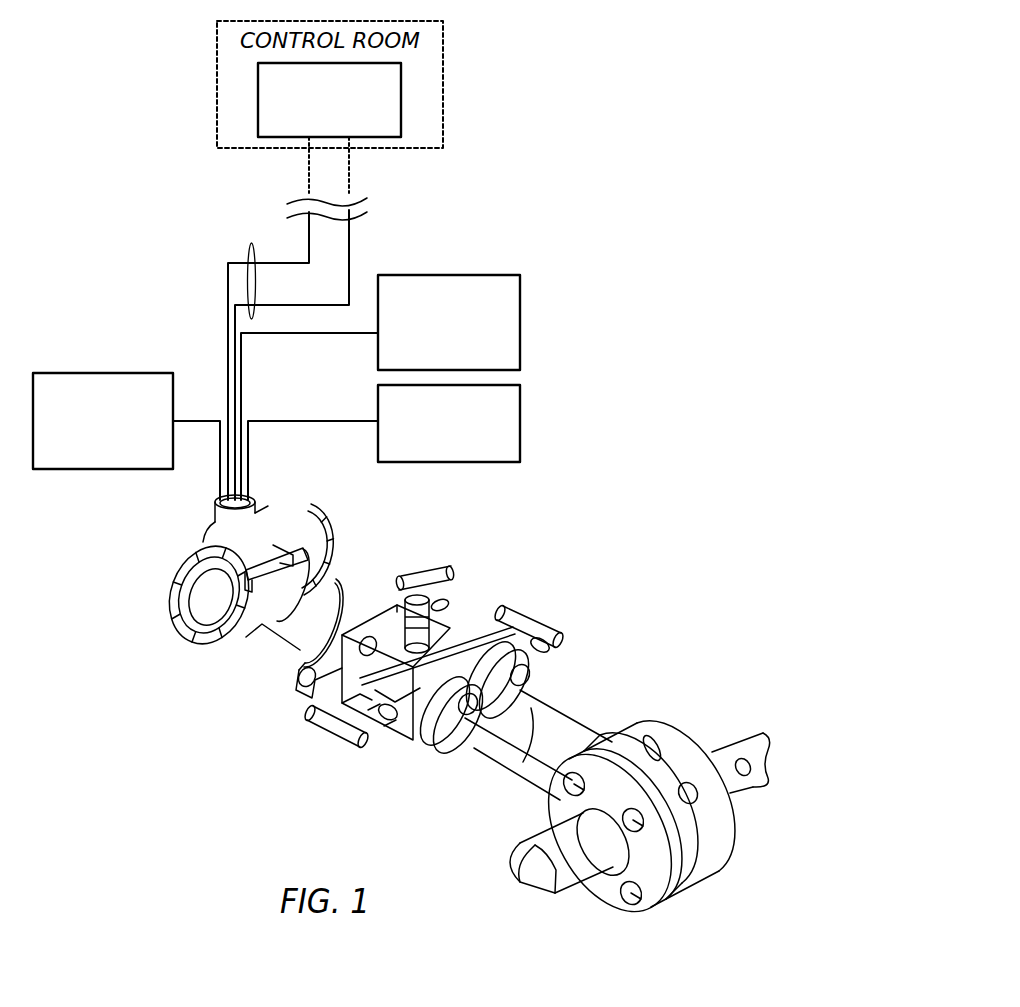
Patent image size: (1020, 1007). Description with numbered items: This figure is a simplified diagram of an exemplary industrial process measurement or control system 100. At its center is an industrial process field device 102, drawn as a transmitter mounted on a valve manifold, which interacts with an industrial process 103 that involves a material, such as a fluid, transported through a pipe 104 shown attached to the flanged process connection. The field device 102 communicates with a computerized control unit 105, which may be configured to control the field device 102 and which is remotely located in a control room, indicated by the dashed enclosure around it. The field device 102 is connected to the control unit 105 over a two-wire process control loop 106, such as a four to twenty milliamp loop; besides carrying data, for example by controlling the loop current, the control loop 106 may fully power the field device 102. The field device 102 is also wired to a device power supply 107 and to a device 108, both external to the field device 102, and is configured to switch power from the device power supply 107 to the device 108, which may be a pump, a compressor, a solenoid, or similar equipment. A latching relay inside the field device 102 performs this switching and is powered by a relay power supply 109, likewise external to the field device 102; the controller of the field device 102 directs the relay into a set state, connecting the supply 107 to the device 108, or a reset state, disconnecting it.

The industrial process measurement or control system 100 is at (673, 122).
The industrial process field device 102 is at (258, 706).
The industrial process 103 is at (795, 802).
The pipe 104 is at (573, 871).
The computerized control unit 105 is at (258, 87).
The two-wire process control loop 106 is at (249, 260).
The device power supply 107 is at (520, 313).
The device 108 is at (520, 406).
The relay power supply 109 is at (130, 376).